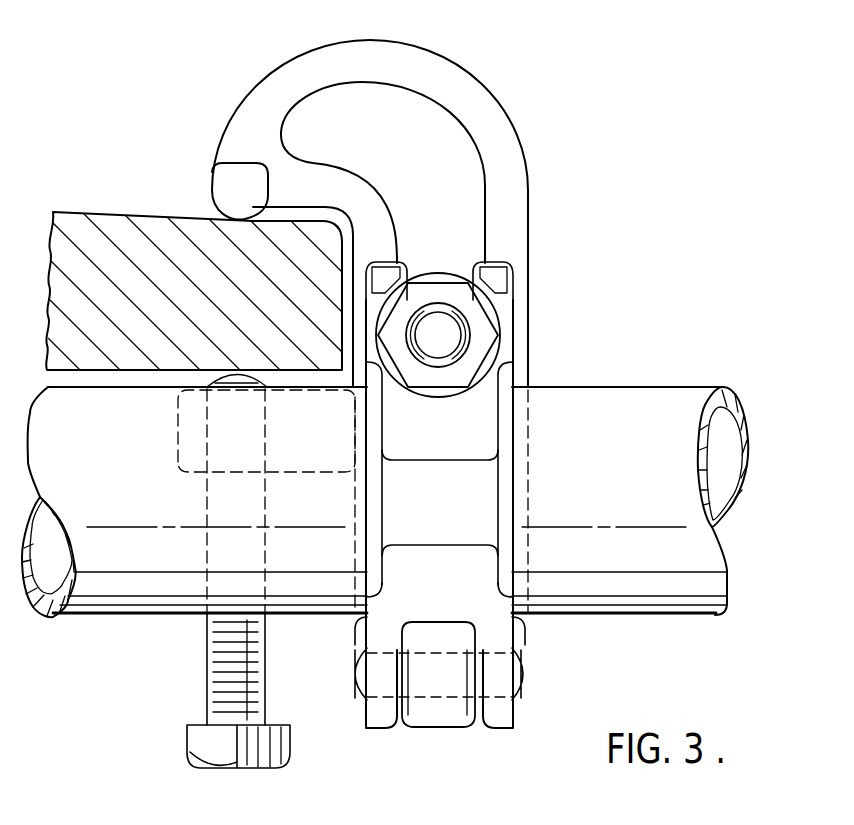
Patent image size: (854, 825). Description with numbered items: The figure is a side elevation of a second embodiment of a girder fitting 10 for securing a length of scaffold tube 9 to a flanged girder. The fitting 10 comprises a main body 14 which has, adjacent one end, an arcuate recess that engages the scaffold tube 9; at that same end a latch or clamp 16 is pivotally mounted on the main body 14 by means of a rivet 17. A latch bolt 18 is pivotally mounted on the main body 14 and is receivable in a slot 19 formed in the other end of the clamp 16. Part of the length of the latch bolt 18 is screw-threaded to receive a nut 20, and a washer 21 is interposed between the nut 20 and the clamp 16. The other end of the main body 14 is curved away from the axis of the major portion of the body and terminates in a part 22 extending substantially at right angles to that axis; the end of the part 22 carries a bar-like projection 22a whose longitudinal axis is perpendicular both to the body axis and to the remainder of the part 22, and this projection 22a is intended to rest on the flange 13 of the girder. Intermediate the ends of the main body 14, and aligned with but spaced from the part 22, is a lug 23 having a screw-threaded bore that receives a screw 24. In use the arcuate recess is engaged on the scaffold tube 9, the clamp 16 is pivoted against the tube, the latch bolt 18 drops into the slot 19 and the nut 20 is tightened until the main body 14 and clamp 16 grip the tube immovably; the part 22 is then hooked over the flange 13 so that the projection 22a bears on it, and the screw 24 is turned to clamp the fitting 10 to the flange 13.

The scaffold tube 9 is at (153, 600).
The fitting 10 is at (447, 80).
The flange 13 is at (135, 212).
The main body 14 is at (505, 172).
The clamp 16 is at (480, 608).
The rivet 17 is at (530, 688).
The latch bolt 18 is at (455, 323).
The slot 19 is at (465, 253).
The nut 20 is at (478, 330).
The washer 21 is at (503, 352).
The part 22 is at (251, 108).
The bar-like projection 22a is at (226, 183).
The lug 23 is at (188, 430).
The screw 24 is at (202, 742).